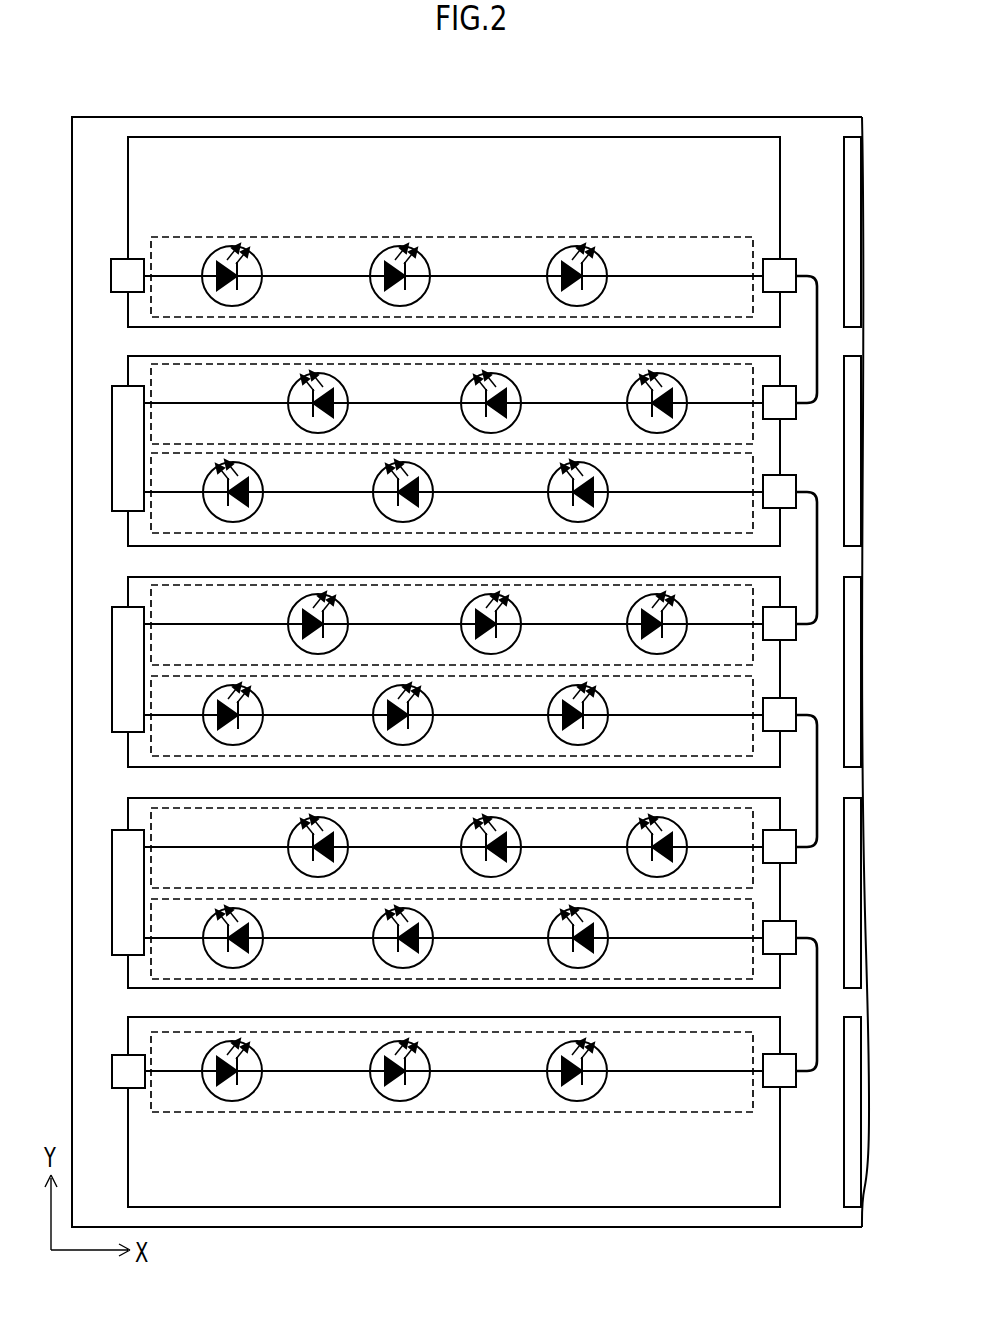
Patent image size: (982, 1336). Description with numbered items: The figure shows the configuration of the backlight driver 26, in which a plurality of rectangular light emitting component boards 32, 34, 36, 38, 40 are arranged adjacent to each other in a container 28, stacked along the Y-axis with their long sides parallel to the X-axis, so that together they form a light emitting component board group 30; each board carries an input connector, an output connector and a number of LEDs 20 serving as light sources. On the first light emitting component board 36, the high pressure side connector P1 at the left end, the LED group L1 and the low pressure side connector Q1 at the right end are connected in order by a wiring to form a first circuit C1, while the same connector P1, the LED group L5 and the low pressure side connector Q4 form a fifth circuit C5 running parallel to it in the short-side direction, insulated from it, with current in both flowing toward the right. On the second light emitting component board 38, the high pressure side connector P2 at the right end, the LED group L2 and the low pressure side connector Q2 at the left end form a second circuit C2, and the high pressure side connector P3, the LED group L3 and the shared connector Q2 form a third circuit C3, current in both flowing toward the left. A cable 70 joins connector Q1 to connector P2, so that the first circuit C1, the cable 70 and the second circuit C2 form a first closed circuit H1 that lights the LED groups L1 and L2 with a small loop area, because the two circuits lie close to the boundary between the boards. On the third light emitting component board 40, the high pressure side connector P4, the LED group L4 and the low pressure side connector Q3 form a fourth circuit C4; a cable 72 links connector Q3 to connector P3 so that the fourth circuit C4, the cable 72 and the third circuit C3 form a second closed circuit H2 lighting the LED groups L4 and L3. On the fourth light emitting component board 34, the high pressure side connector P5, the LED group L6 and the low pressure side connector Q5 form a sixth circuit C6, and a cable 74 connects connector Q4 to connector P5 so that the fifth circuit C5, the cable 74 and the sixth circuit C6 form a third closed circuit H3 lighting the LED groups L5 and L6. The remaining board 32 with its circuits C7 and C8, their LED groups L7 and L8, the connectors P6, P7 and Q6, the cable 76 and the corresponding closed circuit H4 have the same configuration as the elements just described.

The LED 20 is at (249, 256).
The backlight driver 26 is at (636, 101).
The container 28 is at (750, 117).
The light emitting component board group 30 is at (479, 123).
The light emitting component board 32 is at (128, 172).
The fourth light emitting component board 34 is at (128, 363).
The first light emitting component board 36 is at (128, 584).
The second light emitting component board 38 is at (128, 805).
The third light emitting component board 40 is at (128, 1031).
The cable 70 is at (820, 750).
The cable 72 is at (820, 975).
The cable 74 is at (820, 533).
The connection wire 76 is at (820, 302).
The high pressure side connector P1 is at (112, 690).
The high pressure side connector P2 is at (787, 830).
The high pressure side connector P3 is at (787, 921).
The high pressure side connector P4 is at (112, 1068).
The high pressure side connector P5 is at (788, 475).
The positive terminal P6 is at (787, 386).
The positive terminal P7 is at (122, 258).
The low pressure side connector Q1 is at (788, 698).
The low pressure side connector Q2 is at (112, 893).
The low pressure side connector Q3 is at (786, 1089).
The low pressure side connector Q4 is at (787, 607).
The low pressure side connector Q5 is at (112, 473).
The negative terminal Q6 is at (786, 259).
The first closed circuit H1 is at (158, 787).
The second closed circuit H2 is at (158, 1009).
The third closed circuit H3 is at (158, 565).
The gap between boards H4 is at (158, 347).
The first circuit C1 is at (385, 764).
The second circuit C2 is at (534, 802).
The third circuit C3 is at (385, 987).
The fourth circuit C4 is at (534, 1026).
The fifth circuit C5 is at (534, 580).
The sixth circuit C6 is at (385, 542).
The circuit C7 is at (534, 360).
The circuit C8 is at (385, 329).
The LED group L1 is at (441, 757).
The LED group L2 is at (587, 809).
The LED group L3 is at (441, 980).
The LED group L4 is at (587, 1032).
The LED group L5 is at (587, 588).
The LED group L6 is at (441, 534).
The LED line L7 is at (587, 366).
The LED line L8 is at (441, 321).